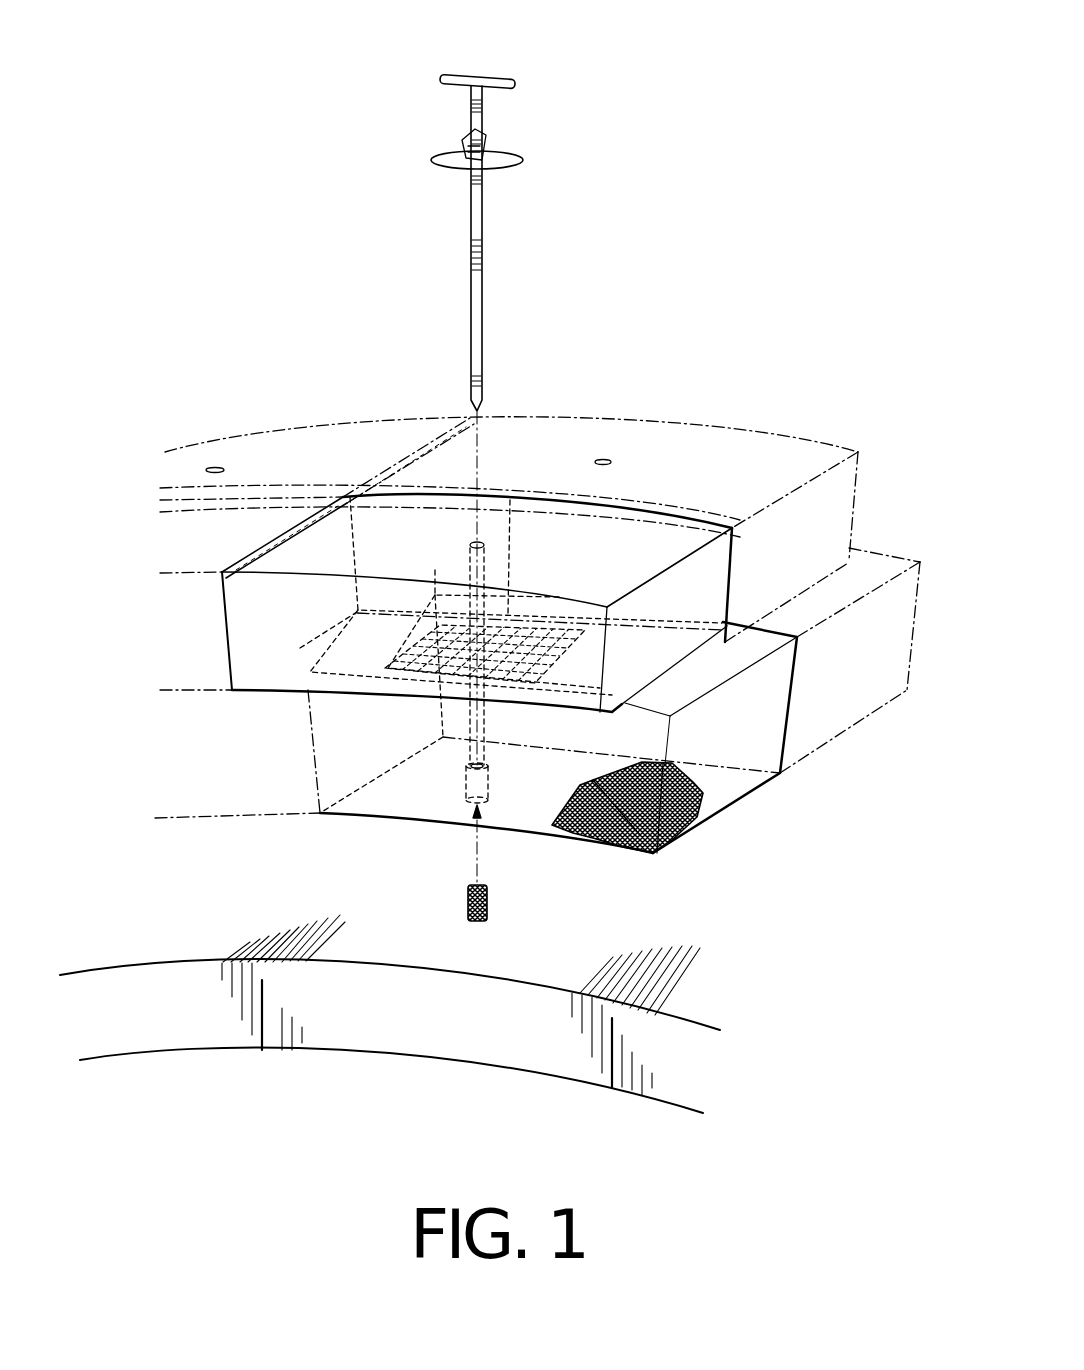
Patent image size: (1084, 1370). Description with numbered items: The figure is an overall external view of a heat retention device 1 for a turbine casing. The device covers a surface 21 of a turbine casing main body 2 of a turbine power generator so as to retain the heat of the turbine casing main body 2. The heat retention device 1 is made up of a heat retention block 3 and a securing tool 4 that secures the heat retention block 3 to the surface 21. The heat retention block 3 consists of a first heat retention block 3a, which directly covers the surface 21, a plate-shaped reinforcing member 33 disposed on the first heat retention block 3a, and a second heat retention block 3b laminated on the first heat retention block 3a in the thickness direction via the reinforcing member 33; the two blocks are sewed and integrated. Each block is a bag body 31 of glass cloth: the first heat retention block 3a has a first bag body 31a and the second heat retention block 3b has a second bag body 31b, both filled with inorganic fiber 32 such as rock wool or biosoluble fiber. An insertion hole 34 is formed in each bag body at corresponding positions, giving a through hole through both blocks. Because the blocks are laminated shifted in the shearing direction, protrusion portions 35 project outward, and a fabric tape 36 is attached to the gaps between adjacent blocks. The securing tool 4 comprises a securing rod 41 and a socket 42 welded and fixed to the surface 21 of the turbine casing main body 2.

The heat retention device 1 is at (250, 170).
The turbine casing main body 2 is at (390, 982).
The surface 21 is at (205, 913).
The heat retention block 3 is at (752, 368).
The first heat retention block 3a is at (913, 603).
The second heat retention block 3b is at (852, 488).
The bag body 31 is at (508, 737).
The first bag body 31a is at (848, 672).
The second bag body 31b is at (740, 465).
The inorganic fiber 32 is at (663, 830).
The reinforcing member 33 is at (527, 497).
The insertion hole 34 is at (472, 538).
The protrusion portion 35 is at (266, 690).
The fabric tape 36 is at (375, 468).
The securing tool 4 is at (572, 78).
The securing rod 41 is at (522, 238).
The socket 42 is at (487, 915).